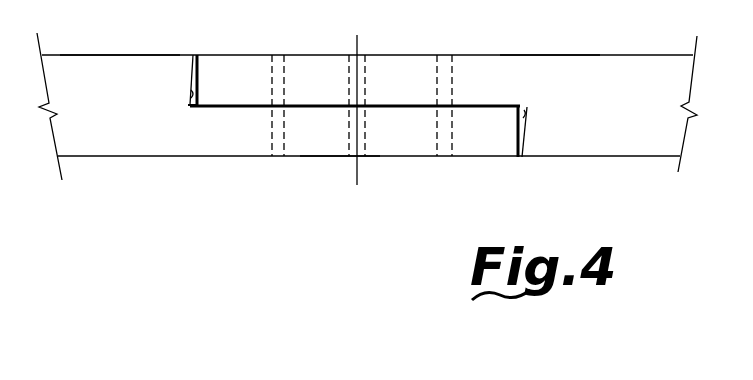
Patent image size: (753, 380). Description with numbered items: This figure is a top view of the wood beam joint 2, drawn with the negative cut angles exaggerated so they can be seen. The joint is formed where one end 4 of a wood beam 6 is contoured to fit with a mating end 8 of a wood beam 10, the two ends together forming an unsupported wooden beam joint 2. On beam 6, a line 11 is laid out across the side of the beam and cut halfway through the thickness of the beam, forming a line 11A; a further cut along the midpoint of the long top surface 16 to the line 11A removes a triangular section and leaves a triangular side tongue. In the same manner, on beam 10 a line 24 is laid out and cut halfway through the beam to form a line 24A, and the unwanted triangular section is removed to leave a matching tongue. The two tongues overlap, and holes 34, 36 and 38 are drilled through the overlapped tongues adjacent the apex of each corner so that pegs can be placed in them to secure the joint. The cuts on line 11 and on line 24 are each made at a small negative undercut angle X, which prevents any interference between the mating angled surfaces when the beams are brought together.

The wood beam 10 is at (117, 54).
The line 24 is at (192, 54).
The line 24A is at (188, 108).
The hole 34 is at (270, 73).
The hole 38 is at (350, 80).
The hole 36 is at (437, 80).
The long top surface 16 is at (509, 72).
The wood beam 6 is at (604, 54).
The line 11A is at (528, 106).
The negative undercut angle X is at (193, 90).
The mating end 8 is at (218, 145).
The wood beam joint 2 is at (340, 158).
The line 11 is at (522, 160).
The end 4 is at (588, 145).